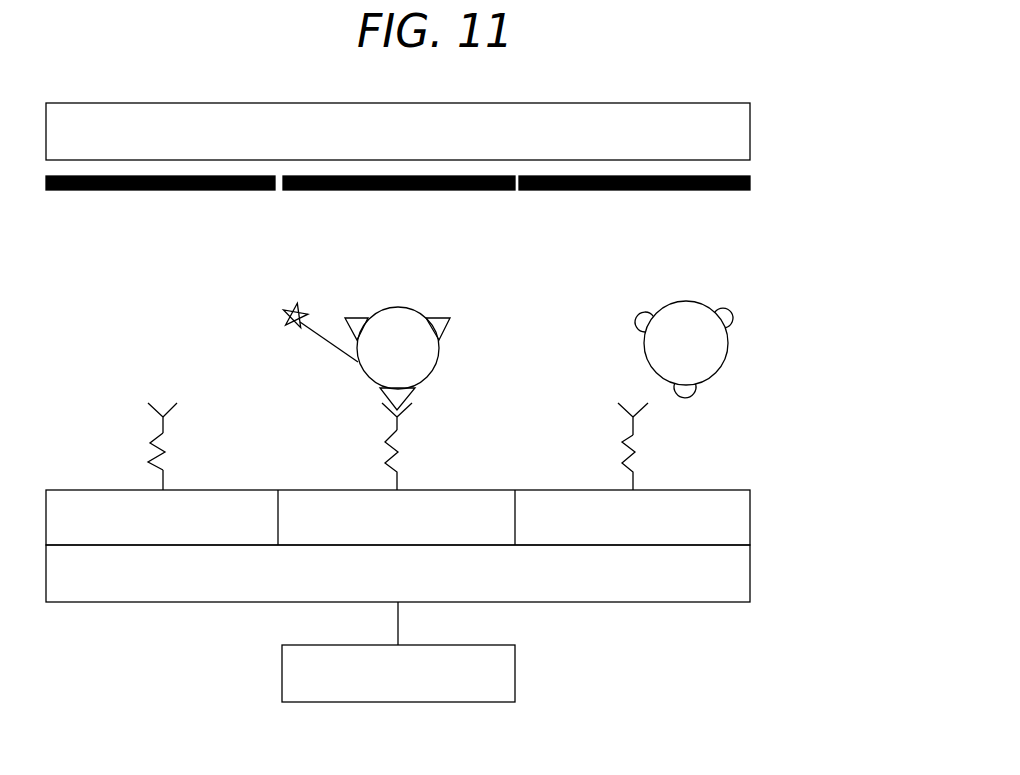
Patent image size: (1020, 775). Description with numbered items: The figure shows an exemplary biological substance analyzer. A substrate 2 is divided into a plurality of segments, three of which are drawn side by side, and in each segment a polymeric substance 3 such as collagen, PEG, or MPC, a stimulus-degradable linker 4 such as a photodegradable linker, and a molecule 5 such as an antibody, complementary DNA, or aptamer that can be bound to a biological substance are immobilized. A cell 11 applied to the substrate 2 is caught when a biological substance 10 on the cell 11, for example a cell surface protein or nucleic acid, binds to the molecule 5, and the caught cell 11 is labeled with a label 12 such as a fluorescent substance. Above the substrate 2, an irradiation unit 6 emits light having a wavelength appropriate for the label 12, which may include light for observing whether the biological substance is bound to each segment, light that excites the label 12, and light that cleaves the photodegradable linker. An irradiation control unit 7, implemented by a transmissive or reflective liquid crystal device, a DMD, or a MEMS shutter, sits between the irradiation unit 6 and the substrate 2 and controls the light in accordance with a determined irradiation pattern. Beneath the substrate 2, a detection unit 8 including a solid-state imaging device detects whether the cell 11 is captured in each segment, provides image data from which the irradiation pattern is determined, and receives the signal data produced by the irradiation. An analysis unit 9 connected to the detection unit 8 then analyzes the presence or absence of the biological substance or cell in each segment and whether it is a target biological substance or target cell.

The substrate 2 is at (750, 520).
The polymeric substance 3 is at (160, 478).
The stimulus-degradable linker 4 is at (153, 460).
The molecule 5 is at (153, 417).
The irradiation unit 6 is at (750, 128).
The irradiation control unit 7 is at (750, 183).
The detection unit 8 is at (750, 577).
The analysis unit 9 is at (515, 668).
The biological substance 10 is at (697, 393).
The cell 11 is at (713, 342).
The label 12 is at (288, 318).